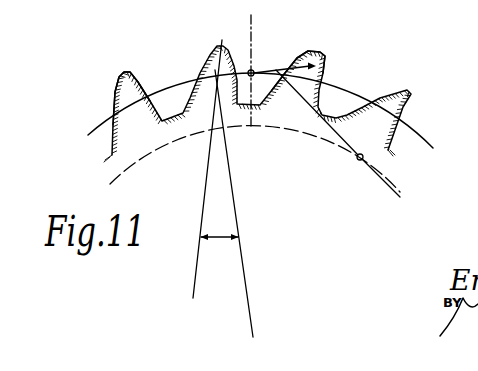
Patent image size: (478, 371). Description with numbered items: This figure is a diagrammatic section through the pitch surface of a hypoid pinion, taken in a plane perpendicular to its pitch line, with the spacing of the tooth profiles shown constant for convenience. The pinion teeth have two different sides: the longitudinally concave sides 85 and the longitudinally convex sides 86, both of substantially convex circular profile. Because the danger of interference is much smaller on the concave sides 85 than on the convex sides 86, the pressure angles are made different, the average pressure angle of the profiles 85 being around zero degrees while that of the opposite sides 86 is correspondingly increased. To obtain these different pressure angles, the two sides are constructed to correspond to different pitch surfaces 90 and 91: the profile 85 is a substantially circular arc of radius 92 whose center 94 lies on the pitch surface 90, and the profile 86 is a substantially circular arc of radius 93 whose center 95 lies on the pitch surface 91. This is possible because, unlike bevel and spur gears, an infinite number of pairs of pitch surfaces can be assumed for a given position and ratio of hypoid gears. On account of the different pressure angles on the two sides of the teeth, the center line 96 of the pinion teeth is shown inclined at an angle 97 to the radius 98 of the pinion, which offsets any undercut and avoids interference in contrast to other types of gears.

The longitudinally concave sides 85 is at (139, 82).
The longitudinally convex sides 86 is at (115, 90).
The pitch surface 90 is at (423, 139).
The pitch surface 91 is at (387, 181).
The radius 92 is at (267, 70).
The radius 93 is at (311, 107).
The center 94 is at (250, 71).
The center 95 is at (360, 160).
The center line of the pinion teeth 96 is at (204, 198).
The angle 97 is at (222, 240).
The radius 98 is at (238, 223).